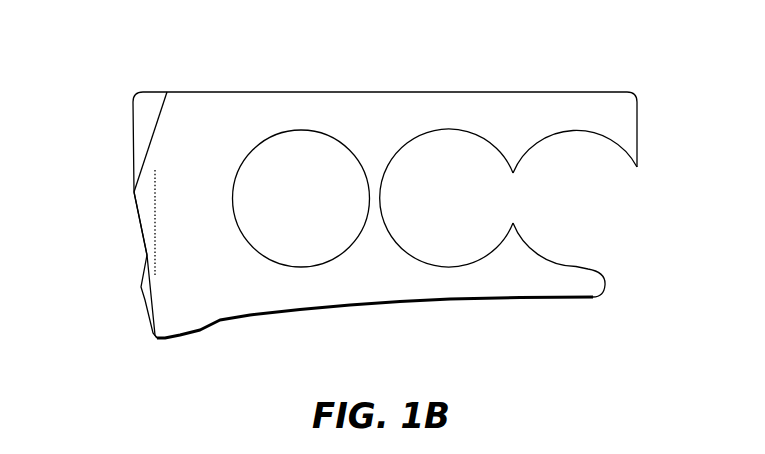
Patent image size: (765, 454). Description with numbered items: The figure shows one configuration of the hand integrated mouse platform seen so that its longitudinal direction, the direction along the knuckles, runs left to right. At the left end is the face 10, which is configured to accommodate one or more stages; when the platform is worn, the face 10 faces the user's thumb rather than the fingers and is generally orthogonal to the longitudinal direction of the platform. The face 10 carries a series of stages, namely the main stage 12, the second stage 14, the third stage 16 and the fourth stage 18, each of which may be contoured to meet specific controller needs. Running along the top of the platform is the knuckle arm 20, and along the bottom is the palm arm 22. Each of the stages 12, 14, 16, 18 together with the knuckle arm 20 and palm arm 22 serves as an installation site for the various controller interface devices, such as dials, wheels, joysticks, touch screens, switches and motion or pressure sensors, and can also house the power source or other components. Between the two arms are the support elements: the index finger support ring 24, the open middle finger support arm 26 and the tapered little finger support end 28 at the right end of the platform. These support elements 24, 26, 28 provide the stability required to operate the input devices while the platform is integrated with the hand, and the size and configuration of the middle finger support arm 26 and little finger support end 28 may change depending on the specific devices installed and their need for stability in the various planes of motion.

The face 10 is at (118, 337).
The main stage 12 is at (117, 149).
The second stage 14 is at (107, 223).
The third stage 16 is at (111, 223).
The fourth stage 18 is at (112, 292).
The knuckle arm 20 is at (235, 120).
The palm arm 22 is at (382, 273).
The index finger support ring 24 is at (300, 152).
The middle finger support arm 26 is at (448, 152).
The little finger support end 28 is at (577, 279).